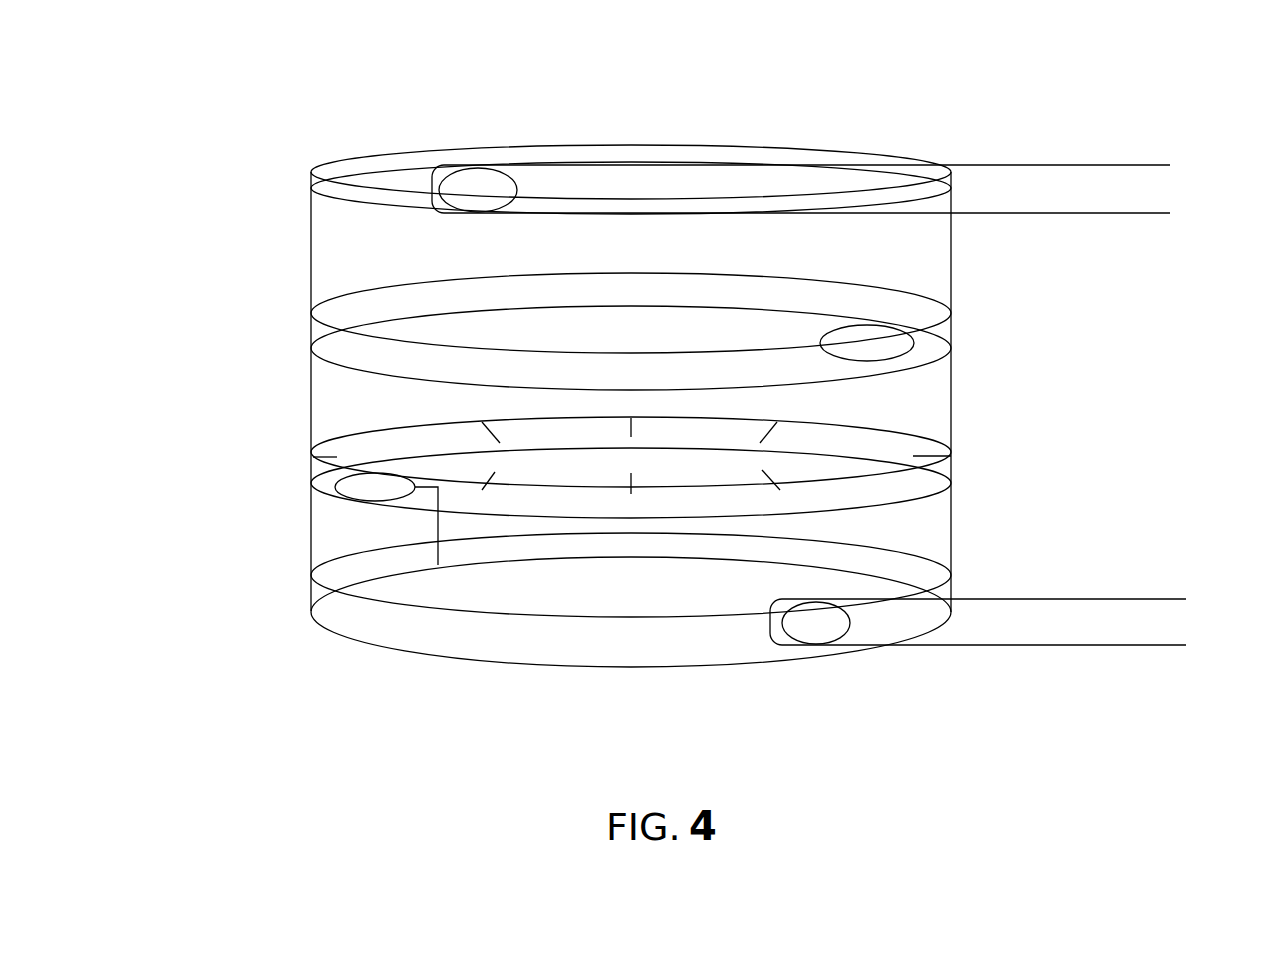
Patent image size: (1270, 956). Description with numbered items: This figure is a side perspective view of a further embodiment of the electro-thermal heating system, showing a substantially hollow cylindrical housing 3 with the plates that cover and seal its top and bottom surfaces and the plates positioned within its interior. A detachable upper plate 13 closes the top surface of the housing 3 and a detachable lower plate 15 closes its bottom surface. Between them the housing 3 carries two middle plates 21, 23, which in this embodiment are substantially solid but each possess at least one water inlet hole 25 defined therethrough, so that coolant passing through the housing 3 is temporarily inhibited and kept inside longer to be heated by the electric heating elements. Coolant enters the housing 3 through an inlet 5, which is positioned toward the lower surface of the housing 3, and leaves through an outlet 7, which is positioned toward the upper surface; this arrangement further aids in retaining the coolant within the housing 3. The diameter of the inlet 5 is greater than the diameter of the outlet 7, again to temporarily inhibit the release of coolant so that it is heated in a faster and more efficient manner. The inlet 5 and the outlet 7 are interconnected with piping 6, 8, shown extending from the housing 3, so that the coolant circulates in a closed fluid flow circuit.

The housing 3 is at (322, 388).
The inlet 5 is at (812, 623).
The piping 6 is at (1138, 630).
The outlet 7 is at (445, 180).
The piping 8 is at (1120, 193).
The upper plate 13 is at (860, 197).
The lower plate 15 is at (622, 590).
The middle plate 21 is at (550, 475).
The middle plate 23 is at (410, 330).
The water inlet hole 25 is at (360, 488).